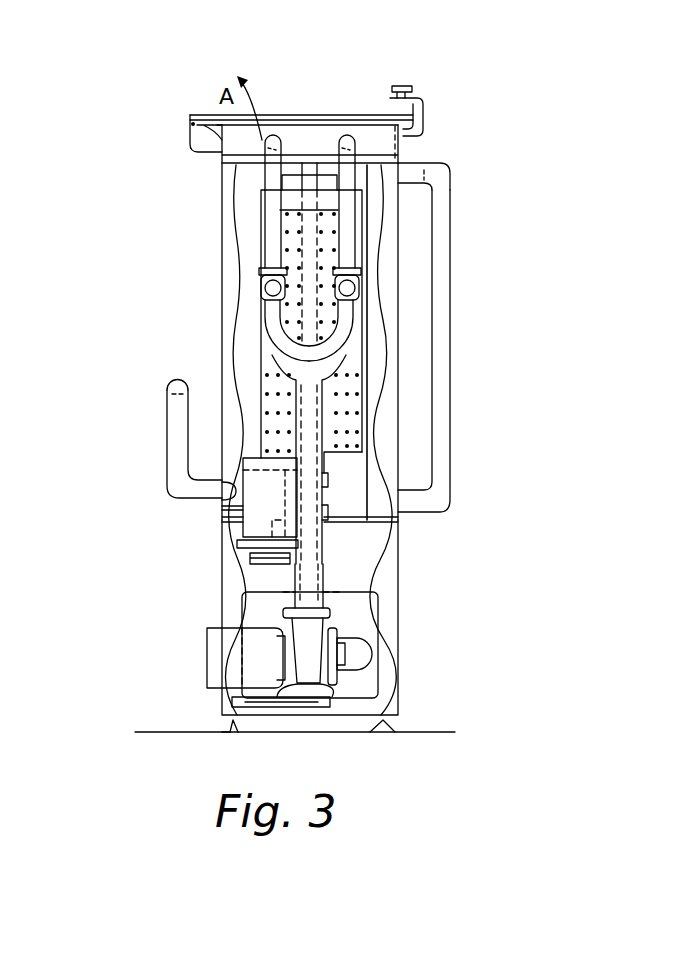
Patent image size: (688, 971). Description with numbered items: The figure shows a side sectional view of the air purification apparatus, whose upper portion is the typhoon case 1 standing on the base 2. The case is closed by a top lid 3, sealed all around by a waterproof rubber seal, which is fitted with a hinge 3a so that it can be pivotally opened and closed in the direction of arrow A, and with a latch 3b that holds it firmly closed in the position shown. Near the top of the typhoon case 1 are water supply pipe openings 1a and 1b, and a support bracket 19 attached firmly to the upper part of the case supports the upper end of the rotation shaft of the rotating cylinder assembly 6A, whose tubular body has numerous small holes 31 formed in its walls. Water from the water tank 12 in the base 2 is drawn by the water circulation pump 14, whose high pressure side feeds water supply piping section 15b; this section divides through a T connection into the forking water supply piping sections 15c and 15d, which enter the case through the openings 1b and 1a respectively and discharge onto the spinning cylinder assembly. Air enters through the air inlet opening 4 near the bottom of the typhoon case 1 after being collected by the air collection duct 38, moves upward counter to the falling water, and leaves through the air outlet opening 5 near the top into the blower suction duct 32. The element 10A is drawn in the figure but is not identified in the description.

The typhoon case 1 is at (214, 294).
The water supply pipe opening 1a is at (266, 135).
The water supply pipe opening 1b is at (347, 137).
The base 2 is at (210, 596).
The top lid 3 is at (367, 117).
The hinge 3a is at (188, 122).
The latch 3b is at (413, 100).
The air inlet opening 4 is at (223, 510).
The air outlet opening 5 is at (410, 163).
The rotating cylinder assembly 6A is at (250, 361).
The heater housing 10A is at (243, 469).
The water tank 12 is at (365, 623).
The water circulation pump 14 is at (196, 649).
The water supply piping section 15b is at (313, 442).
The water supply piping section 15c is at (347, 240).
The water supply piping section 15d is at (273, 240).
The support bracket 19 is at (311, 158).
The small holes 31 is at (350, 416).
The blower suction duct 32 is at (440, 308).
The air collection duct 38 is at (175, 428).